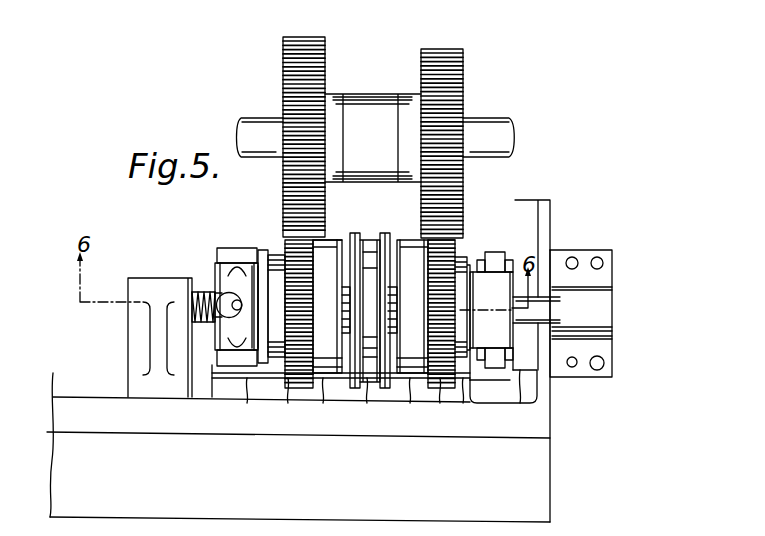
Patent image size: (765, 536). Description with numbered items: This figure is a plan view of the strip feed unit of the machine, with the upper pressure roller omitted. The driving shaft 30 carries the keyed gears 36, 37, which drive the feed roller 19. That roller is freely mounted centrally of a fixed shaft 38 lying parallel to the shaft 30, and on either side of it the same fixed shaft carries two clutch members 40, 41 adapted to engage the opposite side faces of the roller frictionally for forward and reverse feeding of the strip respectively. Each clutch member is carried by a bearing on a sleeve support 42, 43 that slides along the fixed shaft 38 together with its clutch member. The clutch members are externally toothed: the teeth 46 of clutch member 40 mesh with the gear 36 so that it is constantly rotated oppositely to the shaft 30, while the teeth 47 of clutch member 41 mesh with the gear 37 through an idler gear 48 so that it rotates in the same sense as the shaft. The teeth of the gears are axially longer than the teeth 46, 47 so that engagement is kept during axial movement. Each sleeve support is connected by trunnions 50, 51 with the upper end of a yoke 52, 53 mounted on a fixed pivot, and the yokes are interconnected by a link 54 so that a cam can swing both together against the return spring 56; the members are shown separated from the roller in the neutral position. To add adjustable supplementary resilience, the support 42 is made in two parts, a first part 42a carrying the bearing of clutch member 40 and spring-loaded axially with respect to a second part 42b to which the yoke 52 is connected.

The feed roller 19 is at (370, 386).
The shaft 30 is at (492, 120).
The gear 36 is at (297, 42).
The gear 37 is at (444, 48).
The fixed shaft 38 is at (550, 308).
The clutch member 40 is at (326, 376).
The clutch member 41 is at (410, 378).
The sleeve support 42 is at (250, 243).
The first part of support 42a is at (263, 272).
The second part of support 42b is at (246, 262).
The sleeve support 43 is at (475, 282).
The teeth 46 is at (296, 387).
The teeth 47 is at (441, 388).
The idler gear 48 is at (421, 235).
The trunnions 50 is at (232, 252).
The trunnions 51 is at (496, 352).
The yoke 52 is at (215, 272).
The yoke 53 is at (494, 307).
The link 54 is at (253, 368).
The return spring 56 is at (193, 296).